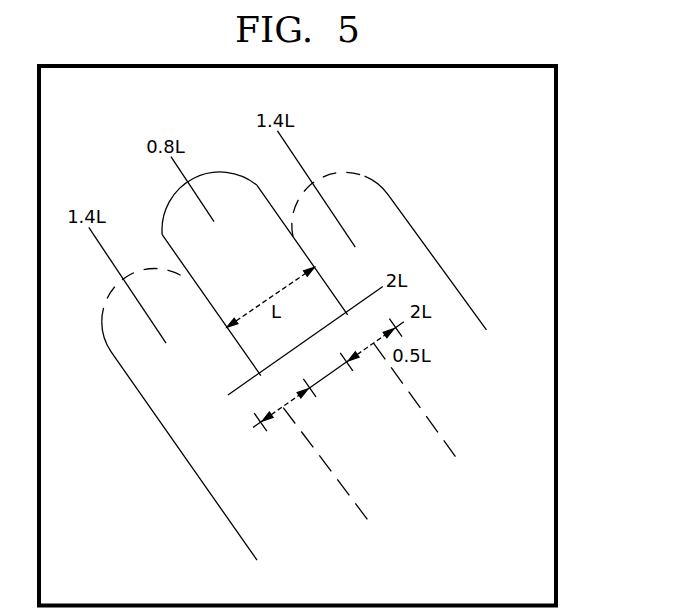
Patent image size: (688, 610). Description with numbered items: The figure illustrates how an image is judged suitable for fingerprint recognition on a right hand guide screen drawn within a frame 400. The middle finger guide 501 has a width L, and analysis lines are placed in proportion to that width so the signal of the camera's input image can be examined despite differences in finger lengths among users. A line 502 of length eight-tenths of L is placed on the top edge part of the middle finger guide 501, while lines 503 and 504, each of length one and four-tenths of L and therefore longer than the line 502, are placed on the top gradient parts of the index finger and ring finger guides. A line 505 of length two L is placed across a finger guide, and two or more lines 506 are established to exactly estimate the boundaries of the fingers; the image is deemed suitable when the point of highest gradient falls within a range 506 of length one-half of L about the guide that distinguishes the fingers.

The display panel region 400 is at (557, 337).
The middle finger guide 501 is at (260, 287).
The line 502 is at (160, 172).
The line 503 is at (92, 238).
The line 504 is at (302, 153).
The line 505 is at (210, 410).
The lines 506 is at (361, 363).